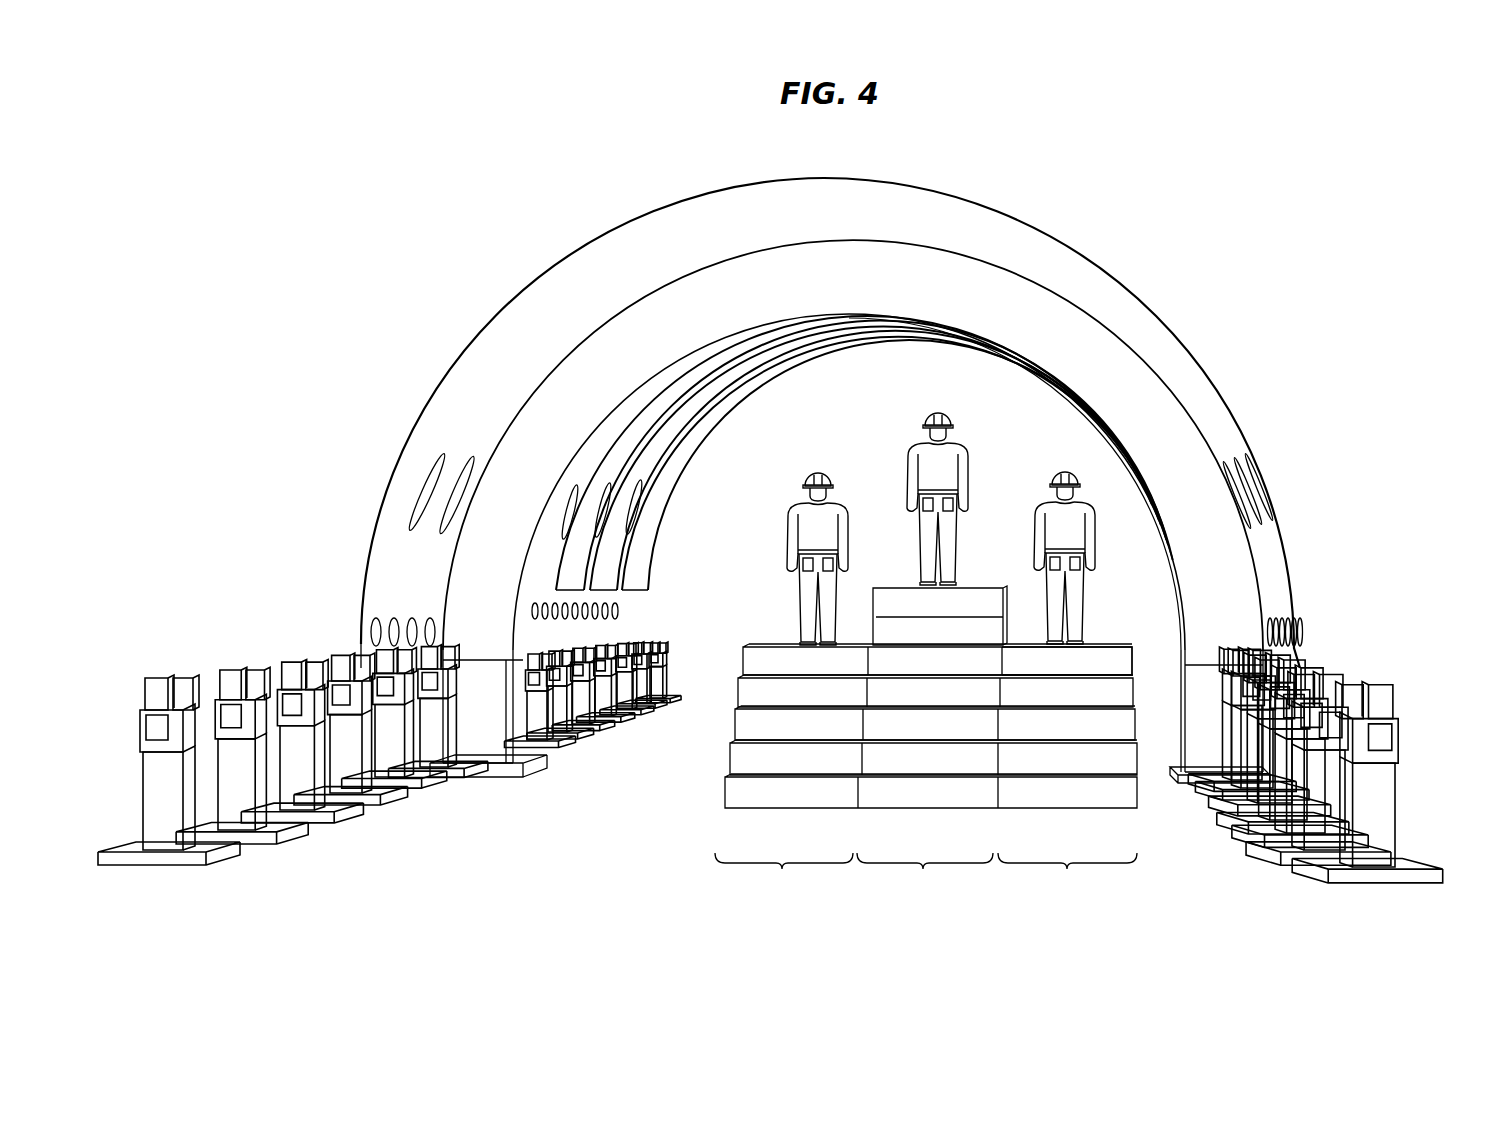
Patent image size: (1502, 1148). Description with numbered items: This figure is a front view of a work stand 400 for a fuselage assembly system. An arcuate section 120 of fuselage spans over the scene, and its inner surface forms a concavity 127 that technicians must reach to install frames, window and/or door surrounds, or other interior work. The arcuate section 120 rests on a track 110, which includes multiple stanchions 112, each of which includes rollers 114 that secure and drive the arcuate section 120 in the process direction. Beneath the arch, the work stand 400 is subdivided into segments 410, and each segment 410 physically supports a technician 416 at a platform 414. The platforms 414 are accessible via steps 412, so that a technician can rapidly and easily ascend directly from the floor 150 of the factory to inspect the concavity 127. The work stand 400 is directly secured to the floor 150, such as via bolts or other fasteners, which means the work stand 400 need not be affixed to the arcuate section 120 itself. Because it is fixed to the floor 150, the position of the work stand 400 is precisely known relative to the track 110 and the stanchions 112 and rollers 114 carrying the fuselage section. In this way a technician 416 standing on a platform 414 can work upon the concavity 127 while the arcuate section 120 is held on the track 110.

The track 110 is at (1331, 788).
The stanchion 112 is at (1430, 858).
The roller 114 is at (1398, 706).
The arcuate section 120 is at (1027, 214).
The concavity 127 is at (652, 441).
The floor 150 is at (583, 835).
The work stand 400 is at (948, 710).
The segment 410 is at (926, 875).
The steps 412 is at (1079, 801).
The platform 414 is at (894, 581).
The technician 416 is at (972, 458).